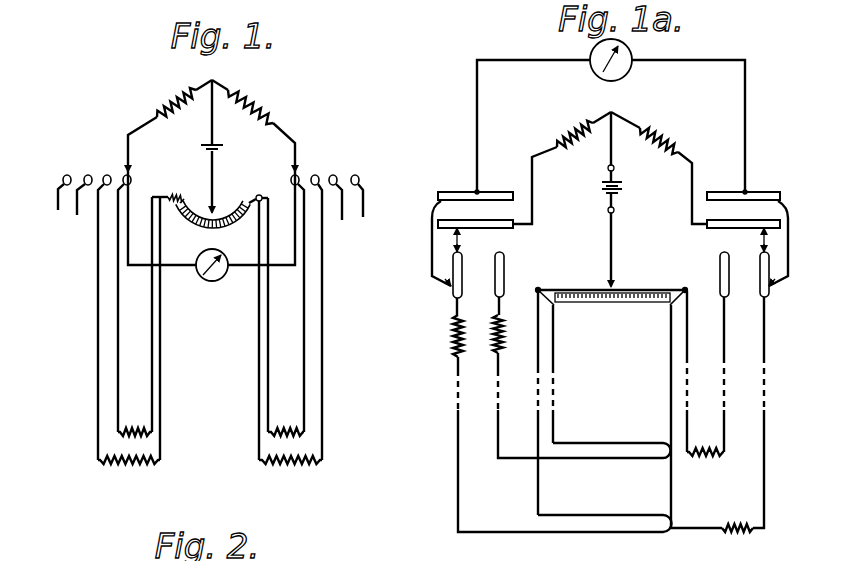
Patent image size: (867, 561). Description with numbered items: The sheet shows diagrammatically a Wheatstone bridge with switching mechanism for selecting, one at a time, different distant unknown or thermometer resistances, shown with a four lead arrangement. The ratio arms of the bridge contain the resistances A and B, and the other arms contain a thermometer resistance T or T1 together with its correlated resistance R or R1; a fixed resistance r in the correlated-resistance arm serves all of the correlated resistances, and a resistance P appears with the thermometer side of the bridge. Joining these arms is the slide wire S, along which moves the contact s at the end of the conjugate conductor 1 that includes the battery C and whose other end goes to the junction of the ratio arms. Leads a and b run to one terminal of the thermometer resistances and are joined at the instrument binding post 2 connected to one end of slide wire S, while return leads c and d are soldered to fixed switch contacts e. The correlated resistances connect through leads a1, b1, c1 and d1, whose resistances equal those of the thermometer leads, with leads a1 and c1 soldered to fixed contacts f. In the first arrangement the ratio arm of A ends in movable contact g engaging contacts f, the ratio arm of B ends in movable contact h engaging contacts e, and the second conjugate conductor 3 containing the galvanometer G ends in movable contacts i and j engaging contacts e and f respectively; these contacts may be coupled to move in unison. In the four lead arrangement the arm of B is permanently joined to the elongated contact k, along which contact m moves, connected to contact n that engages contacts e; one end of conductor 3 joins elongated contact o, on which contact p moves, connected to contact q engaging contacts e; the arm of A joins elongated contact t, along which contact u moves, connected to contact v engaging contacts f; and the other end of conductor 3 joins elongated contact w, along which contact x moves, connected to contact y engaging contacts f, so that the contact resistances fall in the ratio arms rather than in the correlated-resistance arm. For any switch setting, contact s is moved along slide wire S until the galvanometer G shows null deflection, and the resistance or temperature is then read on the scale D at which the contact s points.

In FIG. 1, the ratio arm resistance A is at (184, 102).
In FIG. 1A, the ratio arm resistance A is at (585, 130).
In FIG. 1, the ratio arm resistance B is at (248, 106).
In FIG. 1A, the ratio arm resistance B is at (655, 136).
In FIG. 1, the battery C is at (223, 147).
In FIG. 1A, the battery C is at (624, 188).
In FIG. 1, the galvanometer G is at (205, 282).
In FIG. 1A, the galvanometer G is at (624, 72).
In FIG. 1, the scale D is at (216, 229).
In FIG. 1A, the scale D is at (592, 303).
In FIG. 1, the slide wire S is at (216, 210).
In FIG. 1A, the slide wire S is at (634, 289).
In FIG. 1, the movable contact s is at (208, 208).
In FIG. 1A, the movable contact s is at (616, 283).
In FIG. 1, the fixed resistance r is at (176, 195).
In FIG. 1, the conjugate conductor 1 is at (212, 118).
In FIG. 1A, the conjugate conductor 1 is at (611, 157).
In FIG. 1, the instrument binding post 2 is at (261, 195).
In FIG. 1, the second conjugate conductor 3 is at (128, 230).
In FIG. 1A, the second conjugate conductor 3 is at (477, 133).
In FIG. 1, the fixed switch contacts f is at (124, 176).
In FIG. 1A, the fixed switch contacts f is at (462, 276).
In FIG. 1, the fixed switch contacts e is at (352, 176).
In FIG. 1A, the fixed switch contacts e is at (729, 277).
In FIG. 1, the movable switch contact g is at (132, 177).
In FIG. 1, the movable switch contact h is at (292, 176).
In FIG. 1, the movable switch contact i is at (294, 186).
In FIG. 1, the movable switch contact j is at (131, 184).
In FIG. 1, the lead a is at (268, 326).
In FIG. 1A, the lead a is at (687, 340).
In FIG. 1, the lead b is at (259, 332).
In FIG. 1A, the lead b is at (671, 347).
In FIG. 1, the return lead c is at (304, 312).
In FIG. 1A, the return lead c is at (724, 337).
In FIG. 1, the return lead d is at (322, 328).
In FIG. 1A, the return lead d is at (764, 338).
In FIG. 1, the lead a1 is at (118, 353).
In FIG. 1A, the lead a1 is at (458, 490).
In FIG. 1, the lead b1 is at (155, 360).
In FIG. 1A, the lead b1 is at (538, 430).
In FIG. 1, the lead c1 is at (98, 402).
In FIG. 1A, the lead c1 is at (498, 433).
In FIG. 1, the lead d1 is at (160, 400).
In FIG. 1A, the lead d1 is at (553, 420).
In FIG. 1, the resistance P is at (135, 429).
In FIG. 1A, the correlated resistance R is at (454, 340).
In FIG. 1, the correlated resistance R1 is at (126, 464).
In FIG. 1A, the correlated resistance R1 is at (496, 333).
In FIG. 1, the thermometer resistance T is at (292, 429).
In FIG. 1A, the thermometer resistance T is at (735, 525).
In FIG. 1, the thermometer resistance T1 is at (291, 464).
In FIG. 1A, the thermometer resistance T1 is at (703, 447).
In FIG. 1A, the elongated switch contact w is at (491, 191).
In FIG. 1A, the elongated switch contact t is at (475, 221).
In FIG. 1A, the elongated switch contact o is at (757, 191).
In FIG. 1A, the elongated switch contact k is at (732, 221).
In FIG. 1A, the movable contact x is at (442, 199).
In FIG. 1A, the movable contact p is at (780, 201).
In FIG. 1A, the movable contact u is at (460, 233).
In FIG. 1A, the movable contact v is at (455, 250).
In FIG. 1A, the movable contact m is at (762, 231).
In FIG. 1A, the movable contact n is at (766, 250).
In FIG. 1A, the movable contact y is at (452, 285).
In FIG. 1A, the movable contact q is at (770, 288).